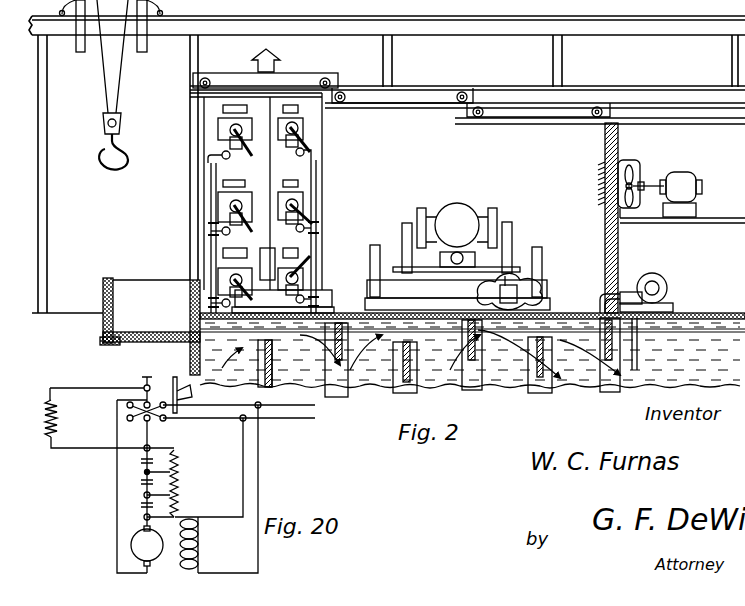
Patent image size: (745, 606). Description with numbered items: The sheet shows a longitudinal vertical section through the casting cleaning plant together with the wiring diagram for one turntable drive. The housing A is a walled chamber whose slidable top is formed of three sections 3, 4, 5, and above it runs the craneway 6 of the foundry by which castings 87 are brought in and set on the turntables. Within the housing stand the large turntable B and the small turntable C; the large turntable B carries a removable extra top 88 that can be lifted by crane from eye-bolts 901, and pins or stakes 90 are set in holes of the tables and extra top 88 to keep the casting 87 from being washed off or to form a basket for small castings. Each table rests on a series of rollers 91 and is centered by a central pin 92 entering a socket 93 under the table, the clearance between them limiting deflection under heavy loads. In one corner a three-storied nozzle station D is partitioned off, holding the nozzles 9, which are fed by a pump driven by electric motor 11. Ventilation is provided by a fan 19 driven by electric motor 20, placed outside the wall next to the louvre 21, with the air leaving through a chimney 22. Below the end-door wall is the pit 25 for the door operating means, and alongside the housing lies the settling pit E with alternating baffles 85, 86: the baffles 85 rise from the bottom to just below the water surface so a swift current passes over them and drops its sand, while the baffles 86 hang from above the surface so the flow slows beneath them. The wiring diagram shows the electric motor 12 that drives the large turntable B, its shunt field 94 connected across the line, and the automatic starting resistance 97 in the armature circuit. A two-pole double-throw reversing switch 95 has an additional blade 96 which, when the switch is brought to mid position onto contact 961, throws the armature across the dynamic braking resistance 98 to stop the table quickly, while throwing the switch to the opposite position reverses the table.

In FIG. 2, the craneway 6 is at (290, 17).
In FIG. 2, the chimney 22 is at (257, 58).
In FIG. 2, the slidable top section 3 is at (313, 77).
In FIG. 2, the slidable top section 4 is at (441, 96).
In FIG. 2, the slidable top section 5 is at (577, 103).
In FIG. 2, the nozzles 9 is at (246, 142).
In FIG. 2, the nozzle station D is at (256, 191).
In FIG. 2, the housing A is at (412, 153).
In FIG. 2, the small turntable C is at (332, 290).
In FIG. 2, the pit 25 is at (116, 326).
In FIG. 2, the settling pit E is at (365, 392).
In FIG. 2, the baffles 85 is at (236, 362).
In FIG. 2, the baffles 86 is at (320, 338).
In FIG. 2, the casting 87 is at (462, 204).
In FIG. 2, the eye-bolts 901 is at (457, 248).
In FIG. 2, the pins or stakes 90 is at (378, 244).
In FIG. 2, the socket 93 is at (457, 289).
In FIG. 2, the central pin 92 is at (457, 305).
In FIG. 2, the extra top 88 is at (505, 276).
In FIG. 2, the rollers 91 is at (538, 278).
In FIG. 2, the large turntable B is at (548, 286).
In FIG. 2, the louvre 21 is at (600, 182).
In FIG. 2, the fan 19 is at (636, 172).
In FIG. 2, the electric motor 20 is at (681, 175).
In FIG. 2, the electric motor 11 is at (667, 283).
In FIG. 20, the additional blade 96 is at (170, 380).
In FIG. 20, the contact 961 is at (144, 386).
In FIG. 20, the dynamic braking resistance 98 is at (62, 418).
In FIG. 20, the automatic starting resistance 97 is at (178, 482).
In FIG. 20, the two-pole double-throw reversing switch 95 is at (158, 418).
In FIG. 20, the electric motor 12 is at (147, 546).
In FIG. 20, the shunt field 94 is at (200, 541).